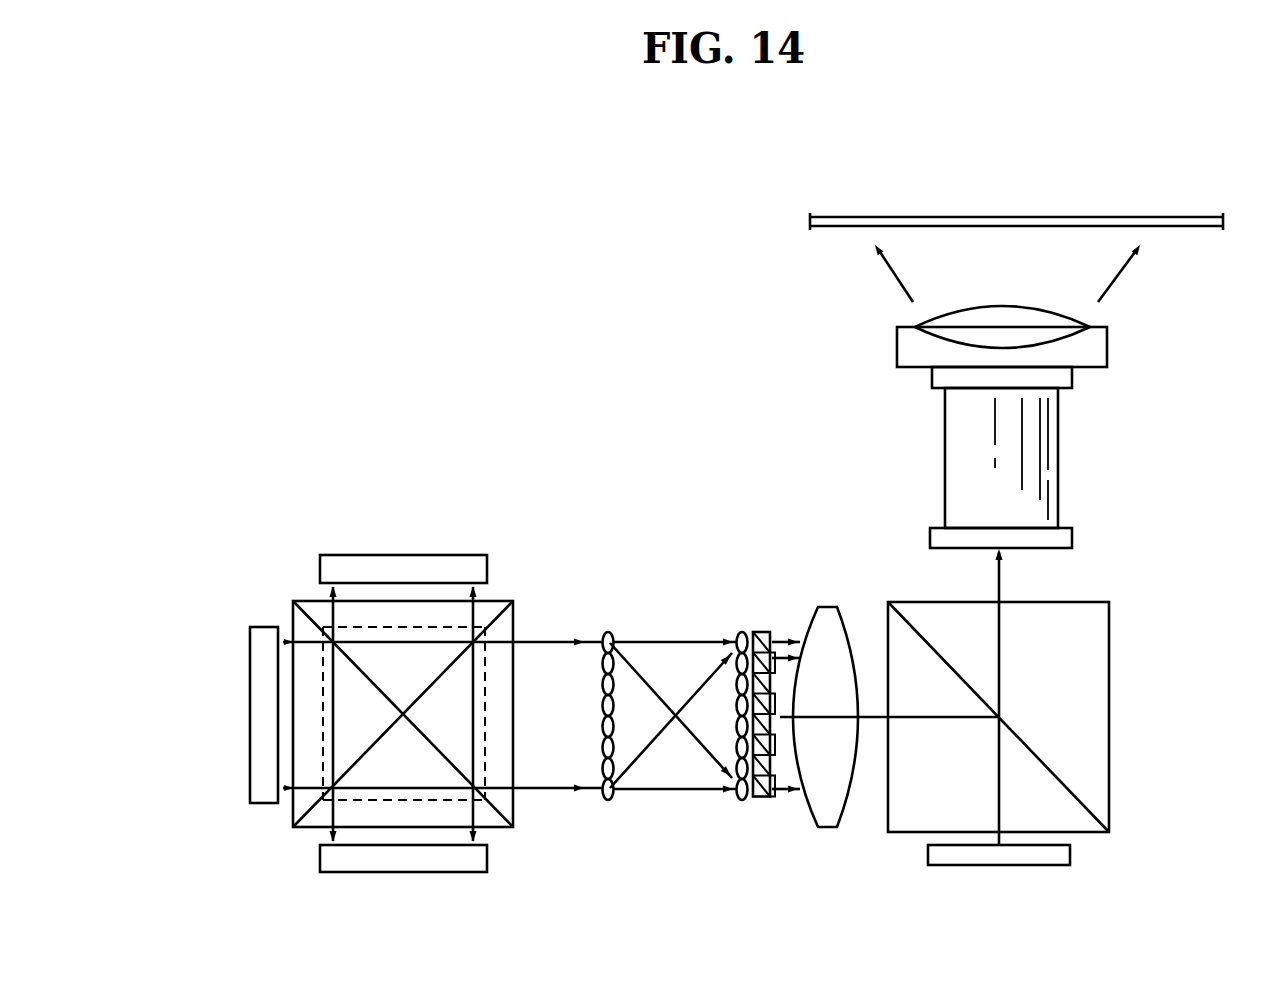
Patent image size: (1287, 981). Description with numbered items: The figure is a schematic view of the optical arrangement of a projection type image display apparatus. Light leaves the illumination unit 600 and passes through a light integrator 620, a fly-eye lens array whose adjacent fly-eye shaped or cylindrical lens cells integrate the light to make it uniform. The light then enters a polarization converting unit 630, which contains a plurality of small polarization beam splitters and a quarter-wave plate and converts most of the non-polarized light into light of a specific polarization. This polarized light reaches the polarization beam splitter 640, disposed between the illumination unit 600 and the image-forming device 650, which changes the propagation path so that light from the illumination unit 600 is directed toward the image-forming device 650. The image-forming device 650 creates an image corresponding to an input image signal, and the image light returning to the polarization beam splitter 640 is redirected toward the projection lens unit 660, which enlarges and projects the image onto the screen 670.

The illumination unit 600 is at (268, 564).
The light integrator 620 is at (602, 822).
The polarization converting unit 630 is at (762, 800).
The polarization beam splitter 640 is at (1120, 683).
The image-forming device 650 is at (1072, 852).
The projection lens unit 660 is at (1136, 347).
The screen 670 is at (1178, 216).